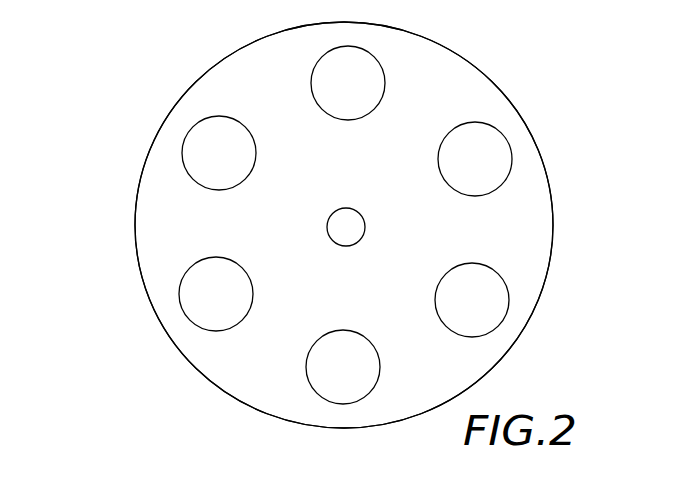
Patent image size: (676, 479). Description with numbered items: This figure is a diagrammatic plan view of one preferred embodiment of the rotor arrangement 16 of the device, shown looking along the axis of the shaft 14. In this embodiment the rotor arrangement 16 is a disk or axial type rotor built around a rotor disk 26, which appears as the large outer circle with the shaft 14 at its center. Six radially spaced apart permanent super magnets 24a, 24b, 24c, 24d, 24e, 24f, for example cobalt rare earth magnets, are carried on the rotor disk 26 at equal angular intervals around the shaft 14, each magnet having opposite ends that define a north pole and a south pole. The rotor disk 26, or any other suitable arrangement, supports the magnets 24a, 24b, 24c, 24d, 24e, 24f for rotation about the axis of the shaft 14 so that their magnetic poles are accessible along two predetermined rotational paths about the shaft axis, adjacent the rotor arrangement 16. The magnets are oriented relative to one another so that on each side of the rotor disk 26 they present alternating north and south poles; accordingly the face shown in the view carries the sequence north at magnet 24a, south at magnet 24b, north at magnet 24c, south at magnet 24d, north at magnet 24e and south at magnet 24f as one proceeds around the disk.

The rotor arrangement 16 is at (163, 83).
The rotor disk 26 is at (553, 213).
The shaft 14 is at (335, 227).
The permanent super magnet 24a is at (493, 152).
The permanent super magnet 24b is at (500, 312).
The permanent super magnet 24c is at (305, 357).
The permanent super magnet 24d is at (190, 282).
The permanent super magnet 24e is at (190, 158).
The permanent super magnet 24f is at (320, 70).